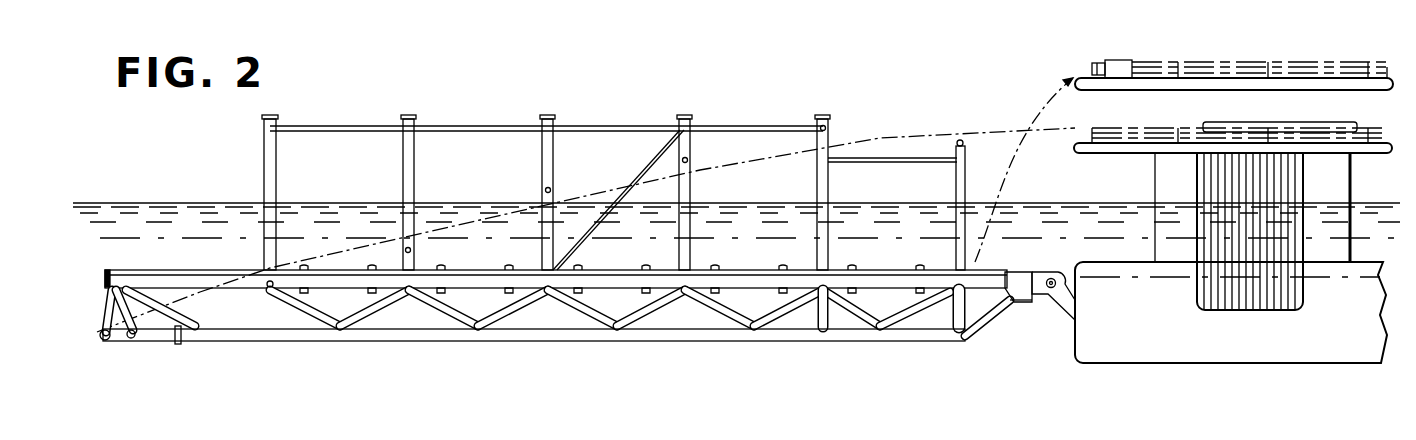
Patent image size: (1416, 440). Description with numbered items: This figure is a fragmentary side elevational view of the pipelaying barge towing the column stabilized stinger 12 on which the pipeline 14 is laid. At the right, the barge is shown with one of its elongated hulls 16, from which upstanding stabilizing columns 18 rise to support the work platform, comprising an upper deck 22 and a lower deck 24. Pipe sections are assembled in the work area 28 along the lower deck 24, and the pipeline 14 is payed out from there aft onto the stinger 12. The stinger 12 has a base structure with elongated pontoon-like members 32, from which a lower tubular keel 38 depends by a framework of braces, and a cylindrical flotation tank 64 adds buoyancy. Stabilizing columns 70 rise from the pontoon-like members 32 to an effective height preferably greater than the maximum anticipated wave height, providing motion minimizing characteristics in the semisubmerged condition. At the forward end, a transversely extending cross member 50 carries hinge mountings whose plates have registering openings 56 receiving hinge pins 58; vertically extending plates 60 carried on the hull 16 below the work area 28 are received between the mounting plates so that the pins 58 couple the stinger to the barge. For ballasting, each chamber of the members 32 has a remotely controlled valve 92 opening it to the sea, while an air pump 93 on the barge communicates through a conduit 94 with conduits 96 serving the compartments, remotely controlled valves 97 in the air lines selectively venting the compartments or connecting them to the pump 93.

The column stabilized stinger 12 is at (495, 108).
The pipeline 14 is at (931, 137).
The hull 16 is at (1215, 349).
The stabilizing column 18 is at (1157, 178).
The upper deck 22 is at (1074, 79).
The lower deck 24 is at (1081, 141).
The work area 28 is at (1325, 140).
The pontoon-like member 32 is at (212, 272).
The tubular keel 38 is at (247, 332).
The cross member 50 is at (1021, 302).
The opening 56 is at (1038, 283).
The hinge pin 58 is at (1051, 290).
The plate 60 is at (1068, 283).
The cylindrical flotation tank 64 is at (941, 315).
The stabilizing column 70 is at (264, 154).
The remotely controlled valve 92 is at (572, 291).
The air pump 93 is at (1136, 62).
The conduit 94 is at (1022, 148).
The conduit 96 is at (921, 268).
The remotely controlled valve 97 is at (446, 268).